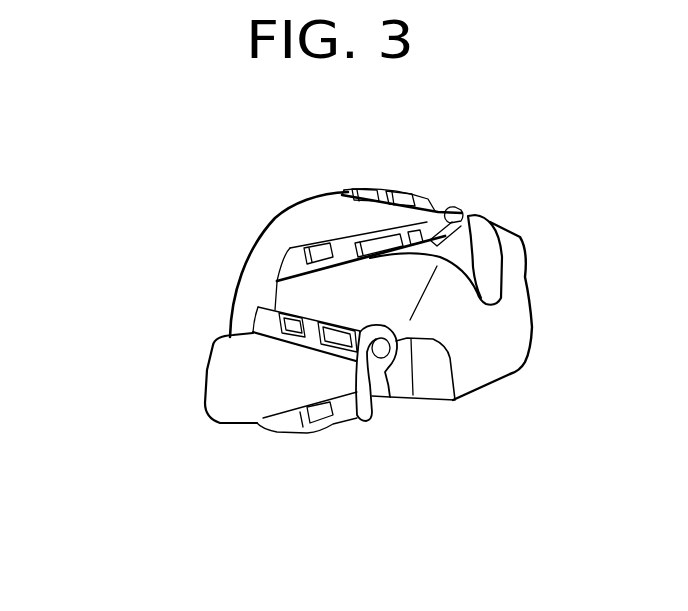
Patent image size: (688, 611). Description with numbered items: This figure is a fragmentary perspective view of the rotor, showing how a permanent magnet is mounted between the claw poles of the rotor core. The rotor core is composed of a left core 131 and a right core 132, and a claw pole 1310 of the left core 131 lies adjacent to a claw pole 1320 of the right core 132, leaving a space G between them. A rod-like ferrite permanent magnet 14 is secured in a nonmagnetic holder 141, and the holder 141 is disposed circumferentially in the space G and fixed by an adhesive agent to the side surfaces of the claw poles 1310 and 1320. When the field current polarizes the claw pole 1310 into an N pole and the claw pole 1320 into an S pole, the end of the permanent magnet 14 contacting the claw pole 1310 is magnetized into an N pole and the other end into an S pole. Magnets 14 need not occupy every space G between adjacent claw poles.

The permanent magnet 14 is at (421, 192).
The nonmagnetic holder 141 is at (505, 193).
The left core 131 is at (246, 235).
The claw pole of the left core 1310 is at (352, 223).
The right core 132 is at (517, 376).
The claw pole of the right core 1320 is at (328, 296).
The space G is at (290, 260).